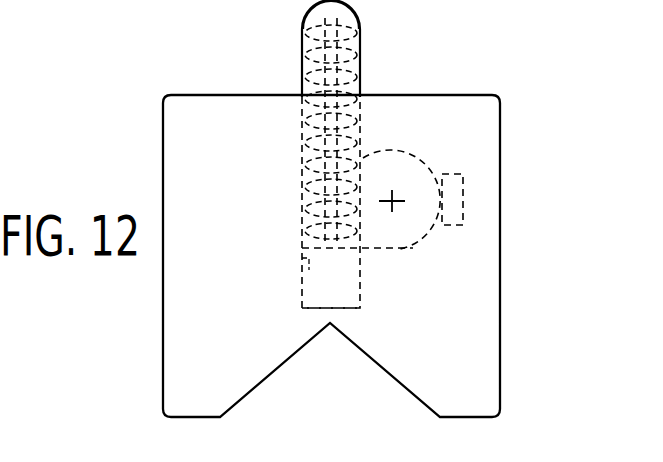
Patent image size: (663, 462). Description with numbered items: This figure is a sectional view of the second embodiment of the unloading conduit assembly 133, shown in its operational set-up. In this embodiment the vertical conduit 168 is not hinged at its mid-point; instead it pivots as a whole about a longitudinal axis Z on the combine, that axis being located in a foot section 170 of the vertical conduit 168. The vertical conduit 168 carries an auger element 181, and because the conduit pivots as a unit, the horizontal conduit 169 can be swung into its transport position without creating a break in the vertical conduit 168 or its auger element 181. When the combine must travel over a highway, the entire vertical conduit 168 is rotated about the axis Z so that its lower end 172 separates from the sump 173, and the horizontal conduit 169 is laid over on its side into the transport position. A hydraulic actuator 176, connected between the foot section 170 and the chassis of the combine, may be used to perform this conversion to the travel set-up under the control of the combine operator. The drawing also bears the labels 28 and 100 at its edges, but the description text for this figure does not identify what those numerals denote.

The housing 28 is at (81, 7).
The body 100 is at (330, 278).
The unloading conduit assembly 133 is at (288, 178).
The vertical conduit 168 is at (360, 128).
The horizontal conduit 169 is at (355, 3).
The foot section 170 is at (386, 242).
The lower end 172 is at (302, 263).
The sump 173 is at (302, 292).
The hydraulic actuator 176 is at (448, 172).
The auger element 181 is at (300, 70).
The longitudinal axis Z is at (396, 204).